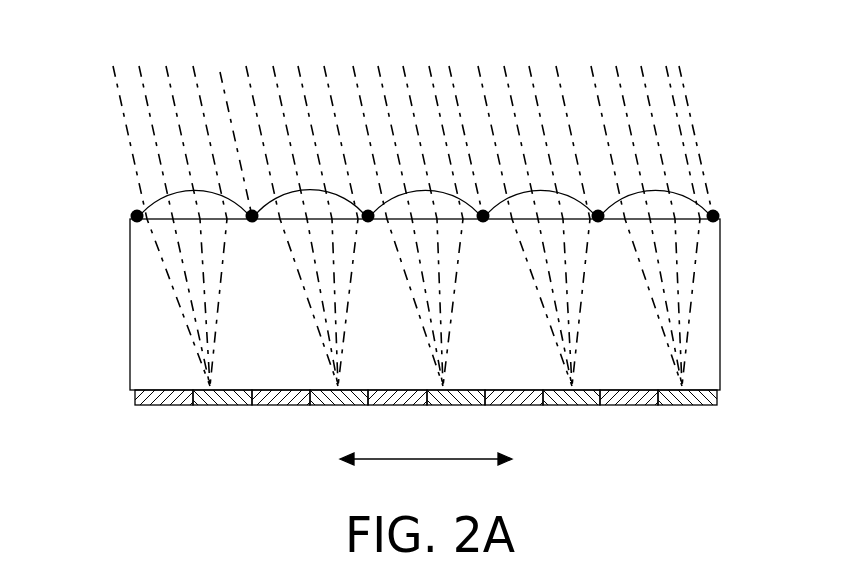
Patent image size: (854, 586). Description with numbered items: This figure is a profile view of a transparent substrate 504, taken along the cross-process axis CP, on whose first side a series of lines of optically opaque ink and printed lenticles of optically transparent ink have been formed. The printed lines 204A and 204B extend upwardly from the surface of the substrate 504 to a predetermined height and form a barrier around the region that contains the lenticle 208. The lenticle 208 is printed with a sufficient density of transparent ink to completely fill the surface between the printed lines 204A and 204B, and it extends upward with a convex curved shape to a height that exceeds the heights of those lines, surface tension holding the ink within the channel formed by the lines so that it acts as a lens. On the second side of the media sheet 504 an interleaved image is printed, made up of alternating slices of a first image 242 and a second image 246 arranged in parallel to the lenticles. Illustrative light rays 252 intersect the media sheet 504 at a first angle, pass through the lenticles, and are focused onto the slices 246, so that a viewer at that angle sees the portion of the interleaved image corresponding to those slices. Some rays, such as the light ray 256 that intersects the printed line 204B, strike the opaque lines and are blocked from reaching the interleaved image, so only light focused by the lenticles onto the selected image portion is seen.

The light rays 252 is at (128, 120).
The light ray 256 is at (222, 84).
The printed line 204A is at (133, 212).
The printed line 204B is at (253, 221).
The lenticle 208 is at (235, 221).
The transparent substrate 504 is at (130, 304).
The first image slices 242 is at (629, 406).
The second image slices 246 is at (691, 406).
The cross-process axis CP is at (405, 462).